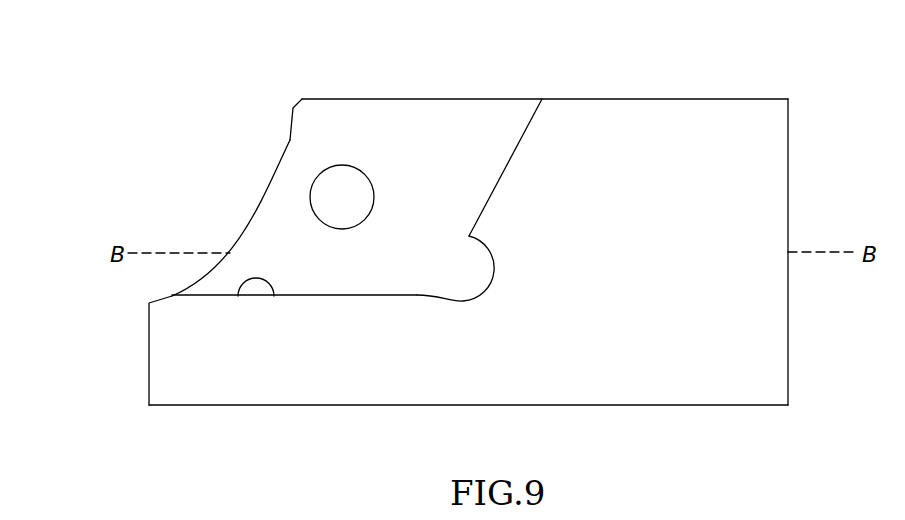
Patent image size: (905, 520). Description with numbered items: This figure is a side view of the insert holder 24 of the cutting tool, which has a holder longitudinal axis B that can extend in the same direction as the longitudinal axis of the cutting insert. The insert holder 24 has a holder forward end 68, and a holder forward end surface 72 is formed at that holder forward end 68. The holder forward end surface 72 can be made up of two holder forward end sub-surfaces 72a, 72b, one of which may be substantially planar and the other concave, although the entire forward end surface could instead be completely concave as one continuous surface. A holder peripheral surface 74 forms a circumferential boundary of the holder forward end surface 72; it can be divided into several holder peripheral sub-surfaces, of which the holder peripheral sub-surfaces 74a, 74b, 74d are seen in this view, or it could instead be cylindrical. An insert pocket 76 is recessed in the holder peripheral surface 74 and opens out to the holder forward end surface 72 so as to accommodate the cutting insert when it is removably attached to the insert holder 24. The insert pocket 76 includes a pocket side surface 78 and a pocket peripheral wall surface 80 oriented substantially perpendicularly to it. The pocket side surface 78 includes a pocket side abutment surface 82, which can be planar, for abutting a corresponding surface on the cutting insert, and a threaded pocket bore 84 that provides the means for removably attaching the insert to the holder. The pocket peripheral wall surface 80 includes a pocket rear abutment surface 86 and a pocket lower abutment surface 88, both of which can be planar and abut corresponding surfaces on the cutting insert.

The insert holder 24 is at (740, 82).
The holder forward end 68 is at (190, 130).
The holder forward end surface 72 is at (290, 140).
The holder forward end sub-surface 72a is at (243, 237).
The holder forward end sub-surface 72b is at (149, 360).
The holder peripheral surface 74 is at (760, 280).
The holder peripheral sub-surface 74a is at (747, 330).
The holder peripheral sub-surface 74b is at (678, 405).
The holder peripheral sub-surface 74d is at (651, 99).
The insert pocket 76 is at (427, 125).
The pocket side surface 78 is at (382, 122).
The pocket peripheral wall surface 80 is at (530, 117).
The pocket side abutment surface 82 is at (460, 116).
The threaded pocket bore 84 is at (340, 165).
The pocket rear abutment surface 86 is at (517, 143).
The pocket lower abutment surface 88 is at (238, 297).